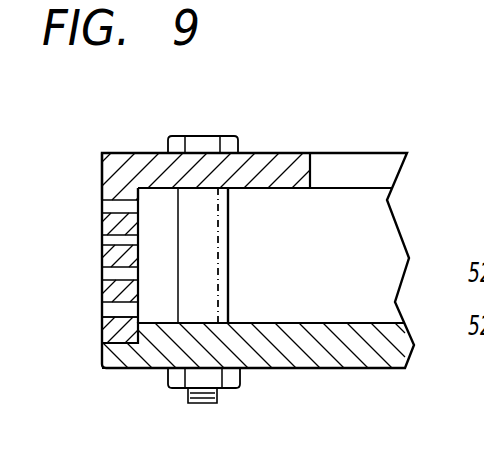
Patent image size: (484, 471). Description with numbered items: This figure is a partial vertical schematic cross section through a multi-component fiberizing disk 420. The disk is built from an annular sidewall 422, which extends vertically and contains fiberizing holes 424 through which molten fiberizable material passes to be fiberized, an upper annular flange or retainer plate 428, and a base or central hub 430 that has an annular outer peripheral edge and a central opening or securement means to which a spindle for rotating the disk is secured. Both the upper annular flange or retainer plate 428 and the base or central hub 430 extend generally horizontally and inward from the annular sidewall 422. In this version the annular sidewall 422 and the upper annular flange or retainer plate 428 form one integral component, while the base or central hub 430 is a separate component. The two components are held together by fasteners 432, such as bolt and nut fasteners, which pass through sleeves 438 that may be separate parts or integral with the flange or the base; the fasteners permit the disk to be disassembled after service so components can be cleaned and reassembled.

The multi-component fiberizing disk 420 is at (404, 121).
The annular sidewall 422 is at (101, 327).
The fiberizing holes 424 is at (102, 275).
The upper annular flange or retainer plate 428 is at (277, 152).
The base or central hub 430 is at (287, 360).
The fasteners 432 is at (220, 133).
The sleeves 438 is at (213, 293).